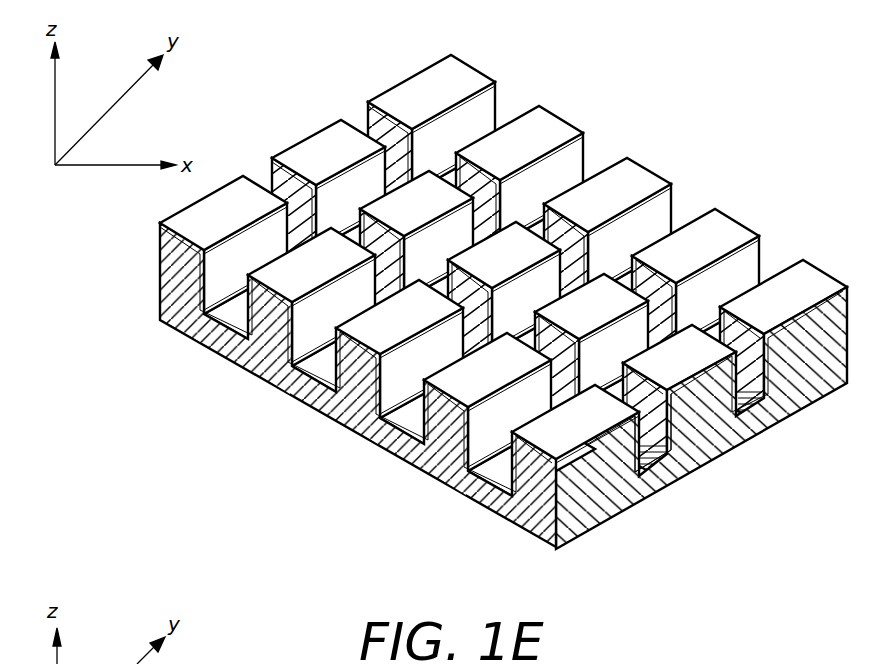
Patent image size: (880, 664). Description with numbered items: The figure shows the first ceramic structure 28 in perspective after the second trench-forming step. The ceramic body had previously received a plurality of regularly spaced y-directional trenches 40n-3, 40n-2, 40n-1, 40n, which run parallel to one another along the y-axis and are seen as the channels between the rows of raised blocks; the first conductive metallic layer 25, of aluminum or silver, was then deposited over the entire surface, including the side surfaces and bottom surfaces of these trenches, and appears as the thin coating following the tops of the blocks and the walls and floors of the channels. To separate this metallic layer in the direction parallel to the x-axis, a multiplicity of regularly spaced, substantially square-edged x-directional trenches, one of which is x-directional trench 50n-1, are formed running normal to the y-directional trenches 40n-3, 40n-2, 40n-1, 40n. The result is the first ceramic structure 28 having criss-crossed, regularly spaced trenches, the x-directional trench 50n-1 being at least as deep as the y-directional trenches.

The first conductive metallic layer 25 is at (470, 82).
The first ceramic structure 28 is at (688, 140).
The y-directional trench 40n-3 is at (225, 312).
The y-directional trench 40n-2 is at (310, 367).
The y-directional trench 40n-1 is at (400, 428).
The y-directional trench 40n is at (493, 472).
The x-directional trench 50n-1 is at (655, 460).